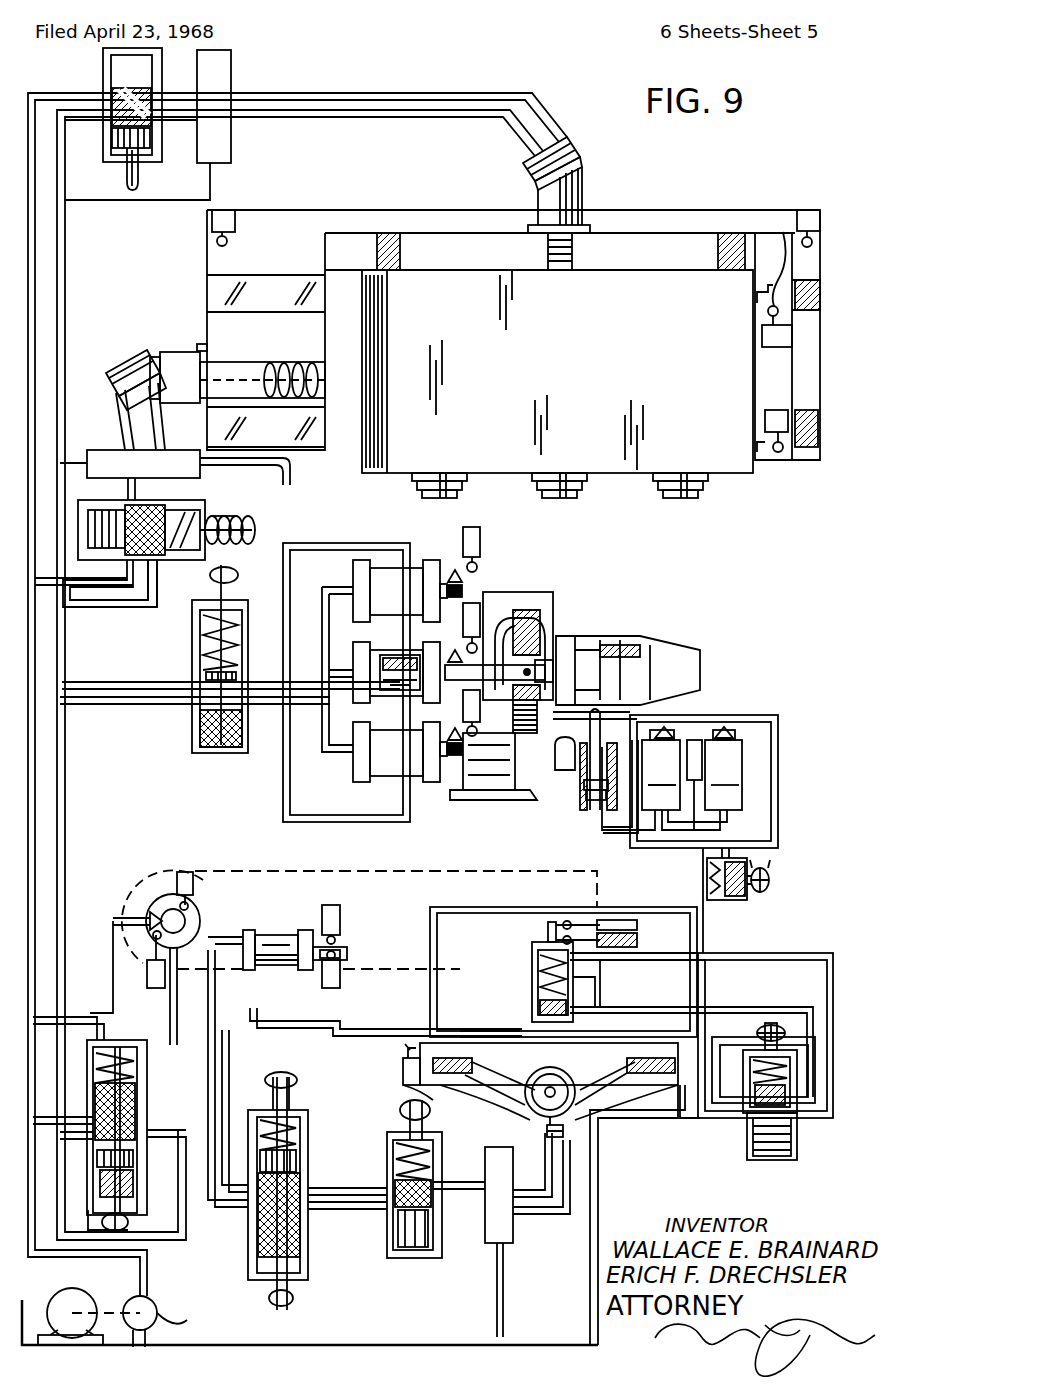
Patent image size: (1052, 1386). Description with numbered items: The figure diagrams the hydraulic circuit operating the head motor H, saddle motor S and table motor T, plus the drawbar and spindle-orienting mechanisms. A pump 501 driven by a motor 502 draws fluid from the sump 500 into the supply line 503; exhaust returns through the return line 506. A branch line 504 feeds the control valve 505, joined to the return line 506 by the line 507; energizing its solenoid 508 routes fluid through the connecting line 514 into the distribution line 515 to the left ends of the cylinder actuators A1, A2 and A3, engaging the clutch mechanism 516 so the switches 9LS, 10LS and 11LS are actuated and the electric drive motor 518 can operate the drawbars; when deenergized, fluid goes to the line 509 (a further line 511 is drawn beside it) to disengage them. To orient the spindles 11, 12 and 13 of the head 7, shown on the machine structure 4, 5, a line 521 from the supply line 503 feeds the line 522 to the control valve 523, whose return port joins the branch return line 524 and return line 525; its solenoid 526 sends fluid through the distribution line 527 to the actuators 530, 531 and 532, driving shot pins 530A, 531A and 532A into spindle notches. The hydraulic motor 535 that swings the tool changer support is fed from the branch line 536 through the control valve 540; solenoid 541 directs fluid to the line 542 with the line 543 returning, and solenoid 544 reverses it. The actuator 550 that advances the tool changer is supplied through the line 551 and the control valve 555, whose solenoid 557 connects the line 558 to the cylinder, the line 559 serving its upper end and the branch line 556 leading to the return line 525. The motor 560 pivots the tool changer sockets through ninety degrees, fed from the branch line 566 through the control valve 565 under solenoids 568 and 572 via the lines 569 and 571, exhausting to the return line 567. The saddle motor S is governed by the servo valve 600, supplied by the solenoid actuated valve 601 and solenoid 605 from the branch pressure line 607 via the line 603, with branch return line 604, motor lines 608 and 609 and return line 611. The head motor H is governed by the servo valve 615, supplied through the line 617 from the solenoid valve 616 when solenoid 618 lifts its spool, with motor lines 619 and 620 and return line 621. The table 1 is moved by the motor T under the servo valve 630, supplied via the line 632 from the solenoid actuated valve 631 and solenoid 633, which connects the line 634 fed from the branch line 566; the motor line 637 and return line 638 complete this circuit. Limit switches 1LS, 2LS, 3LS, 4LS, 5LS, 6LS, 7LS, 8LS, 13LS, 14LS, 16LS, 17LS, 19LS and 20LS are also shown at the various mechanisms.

The table 1 is at (518, 1079).
The column 4 is at (320, 216).
The head support 5 is at (632, 240).
The spindle head 7 is at (600, 388).
The spindle 11 is at (467, 494).
The spindle 12 is at (587, 494).
The spindle 13 is at (708, 494).
The head motor H is at (585, 195).
The saddle motor S is at (192, 348).
The table motor T is at (591, 1100).
The limit switch 1LS is at (810, 210).
The limit switch 2LS is at (783, 232).
The limit switch 3LS is at (403, 1080).
The limit switch 4LS is at (562, 768).
The limit switch 5LS is at (672, 730).
The limit switch 6LS is at (732, 730).
The limit switch 7LS is at (228, 222).
The limit switch 8LS is at (637, 925).
The switch 9LS is at (473, 612).
The switch 10LS is at (466, 540).
The switch 11LS is at (464, 708).
The limit switch 13LS is at (763, 420).
The limit switch 14LS is at (338, 980).
The limit switch 16LS is at (637, 942).
The limit switch 17LS is at (165, 990).
The limit switch 19LS is at (330, 910).
The limit switch 20LS is at (193, 887).
The cylinder actuator A1 is at (407, 591).
The cylinder actuator A2 is at (428, 660).
The cylinder actuator A3 is at (407, 752).
The sump 500 is at (444, 1340).
The pump 501 is at (187, 1318).
The motor 502 is at (83, 1300).
The supply line 503 is at (30, 818).
The branch line 504 is at (163, 706).
The control valve 505 is at (183, 760).
The exhaust line 506 is at (58, 843).
The interconnecting line 507 is at (165, 681).
The solenoid 508 is at (170, 608).
The line 509 is at (268, 706).
The conduit 511 is at (306, 706).
The connecting line 514 is at (260, 683).
The distribution line 515 is at (337, 587).
The clutch mechanism 516 is at (548, 635).
The electric drive motor 518 is at (508, 800).
The hydraulic line 521 is at (73, 1020).
The line 522 is at (437, 908).
The control valve 523 is at (768, 895).
The branch return line 524 is at (708, 983).
The return line 525 is at (596, 1147).
The solenoid 526 is at (768, 872).
The distribution line 527 is at (636, 835).
The actuator 530 is at (587, 812).
The shot pin 530A is at (581, 770).
The actuator 531 is at (664, 785).
The shot pin 531A is at (680, 738).
The actuator 532 is at (723, 770).
The shot pin 532A is at (771, 767).
The hydraulic motor 535 is at (160, 905).
The branch line 536 is at (43, 1126).
The control valve 540 is at (148, 1212).
The solenoid 541 is at (130, 1222).
The hydraulic line 542 is at (150, 1137).
The line 543 is at (113, 921).
The solenoid 544 is at (113, 975).
The actuator 550 is at (528, 973).
The hydraulic line 551 is at (490, 1033).
The control valve 555 is at (745, 1160).
The branch line 556 is at (678, 1118).
The solenoid 557 is at (772, 1023).
The line 558 is at (660, 1012).
The line 559 is at (737, 957).
The motor 560 is at (283, 932).
The control valve 565 is at (295, 1313).
The branch line 566 is at (400, 1110).
The return line 567 is at (305, 1231).
The solenoid 568 is at (260, 1289).
The line 569 is at (230, 1062).
The line 571 is at (230, 938).
The solenoid 572 is at (318, 1060).
The servo valve 600 is at (210, 470).
The solenoid actuated valve 601 is at (225, 512).
The line 603 is at (138, 495).
The branch return line 604 is at (216, 568).
The solenoid 605 is at (250, 531).
The branch pressure line 607 is at (95, 583).
The line 608 is at (112, 408).
The line 609 is at (150, 417).
The return line 611 is at (73, 462).
The servo valve 615 is at (232, 63).
The solenoid valve 616 is at (118, 119).
The line 617 is at (183, 97).
The solenoid 618 is at (140, 182).
The line 619 is at (503, 96).
The line 620 is at (482, 117).
The return line 621 is at (130, 205).
The servo valve 630 is at (508, 1250).
The solenoid actuated valve 631 is at (430, 1262).
The line 632 is at (465, 1183).
The solenoid 633 is at (433, 1100).
The line 634 is at (372, 1185).
The line 637 is at (572, 1213).
The line 638 is at (540, 1142).